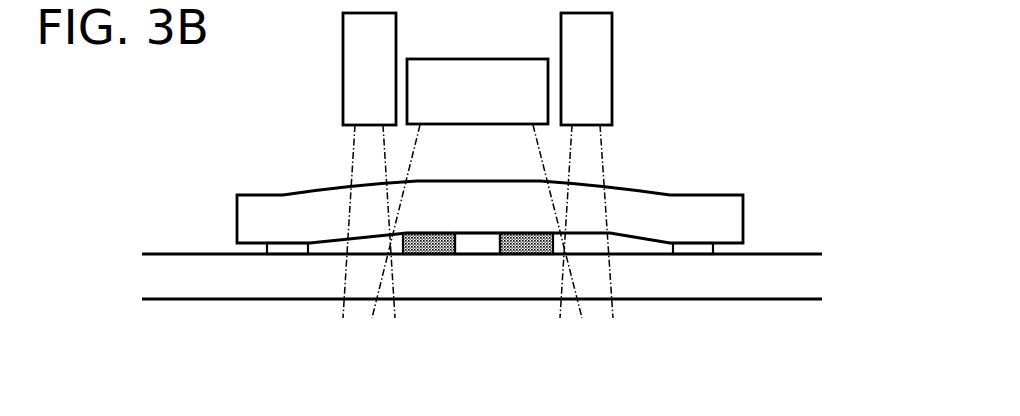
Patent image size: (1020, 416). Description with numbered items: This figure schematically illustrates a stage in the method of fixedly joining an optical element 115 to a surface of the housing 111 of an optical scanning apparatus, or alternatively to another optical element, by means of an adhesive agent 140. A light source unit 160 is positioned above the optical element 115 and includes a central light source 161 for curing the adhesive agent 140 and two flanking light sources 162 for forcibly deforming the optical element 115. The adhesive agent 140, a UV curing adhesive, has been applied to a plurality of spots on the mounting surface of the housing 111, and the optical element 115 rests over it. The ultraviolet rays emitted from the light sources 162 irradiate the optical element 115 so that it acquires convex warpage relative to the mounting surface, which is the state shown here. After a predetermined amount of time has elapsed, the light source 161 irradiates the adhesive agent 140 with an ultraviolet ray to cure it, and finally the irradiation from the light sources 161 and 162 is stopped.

The light source unit 160 is at (484, 159).
The light source 161 is at (495, 58).
The light sources 162 is at (343, 70).
The optical element 115 is at (743, 216).
The housing 111 is at (768, 318).
The adhesive agent 140 is at (512, 255).